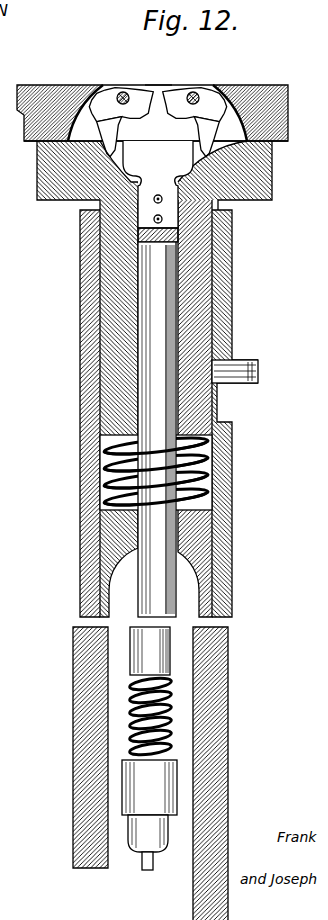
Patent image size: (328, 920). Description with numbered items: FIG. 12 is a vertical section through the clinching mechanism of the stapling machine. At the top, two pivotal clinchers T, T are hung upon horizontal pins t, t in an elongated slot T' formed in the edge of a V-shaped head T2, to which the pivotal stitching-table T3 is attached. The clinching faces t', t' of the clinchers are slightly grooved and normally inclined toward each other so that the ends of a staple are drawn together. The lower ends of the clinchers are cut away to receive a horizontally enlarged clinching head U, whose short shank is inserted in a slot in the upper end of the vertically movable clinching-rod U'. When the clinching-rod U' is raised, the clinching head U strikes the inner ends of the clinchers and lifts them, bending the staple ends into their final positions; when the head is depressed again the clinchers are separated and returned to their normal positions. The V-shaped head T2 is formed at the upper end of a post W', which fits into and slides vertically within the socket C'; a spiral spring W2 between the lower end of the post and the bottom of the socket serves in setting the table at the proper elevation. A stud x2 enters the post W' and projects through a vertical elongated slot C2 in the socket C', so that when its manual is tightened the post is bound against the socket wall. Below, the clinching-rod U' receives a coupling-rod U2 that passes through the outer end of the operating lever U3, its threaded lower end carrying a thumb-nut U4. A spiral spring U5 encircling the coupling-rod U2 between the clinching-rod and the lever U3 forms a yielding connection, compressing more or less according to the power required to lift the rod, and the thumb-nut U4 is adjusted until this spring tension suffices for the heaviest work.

The pivotal stitching-table T3 is at (42, 86).
The elongated slot T' is at (144, 133).
The clinching faces t' is at (158, 81).
The pivotal clinchers T is at (157, 92).
The V-shaped head T2 is at (108, 131).
The horizontal pins t is at (159, 83).
The post W' is at (130, 408).
The socket C' is at (156, 413).
The vertical elongated slot C2 is at (236, 402).
The stud x2 is at (250, 362).
The spiral spring W2 is at (100, 468).
The clinching head U is at (158, 191).
The clinching-rod U' is at (108, 429).
The coupling-rod U2 is at (128, 705).
The spiral spring U5 is at (170, 717).
The operating lever U3 is at (128, 790).
The thumb-nut U4 is at (168, 826).